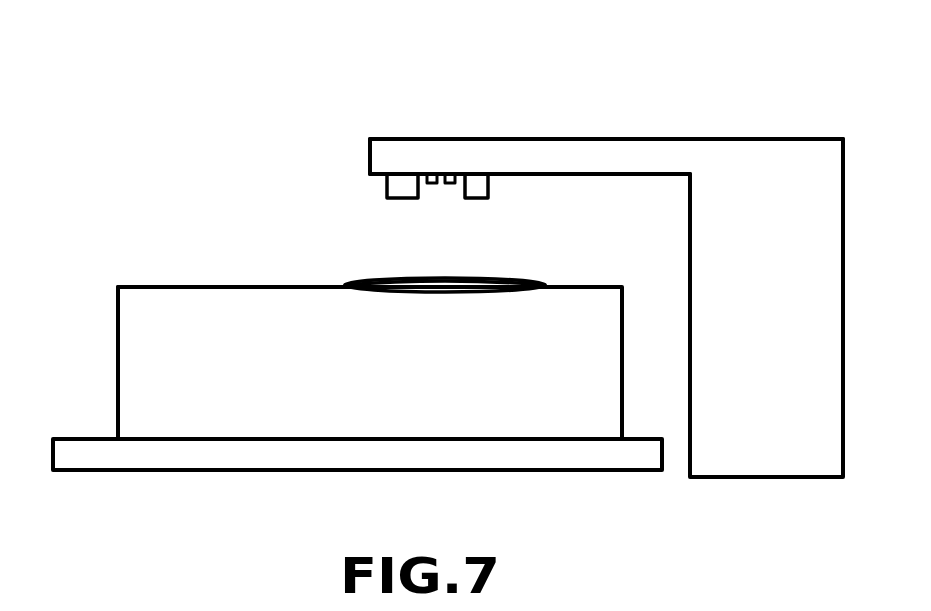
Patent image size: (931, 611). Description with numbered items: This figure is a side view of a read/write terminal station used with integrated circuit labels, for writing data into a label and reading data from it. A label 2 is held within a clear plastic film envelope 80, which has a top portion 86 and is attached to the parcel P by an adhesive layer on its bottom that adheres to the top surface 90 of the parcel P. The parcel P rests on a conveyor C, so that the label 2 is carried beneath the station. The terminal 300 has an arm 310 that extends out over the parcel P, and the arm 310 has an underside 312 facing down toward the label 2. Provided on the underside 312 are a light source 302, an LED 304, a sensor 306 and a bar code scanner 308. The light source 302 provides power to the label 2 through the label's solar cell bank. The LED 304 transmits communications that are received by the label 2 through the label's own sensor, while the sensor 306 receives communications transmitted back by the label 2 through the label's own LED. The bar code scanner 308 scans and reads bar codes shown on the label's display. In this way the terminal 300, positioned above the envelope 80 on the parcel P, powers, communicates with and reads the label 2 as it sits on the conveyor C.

The terminal 300 is at (803, 139).
The arm 310 is at (583, 139).
The underside 312 is at (600, 175).
The light source 302 is at (387, 187).
The LED 304 is at (431, 174).
The sensor 306 is at (450, 174).
The bar code scanner 308 is at (490, 183).
The envelope 80 is at (365, 277).
The top portion 86 is at (418, 278).
The label 2 is at (500, 254).
The top surface 90 is at (147, 288).
The parcel P is at (118, 355).
The conveyor C is at (153, 458).